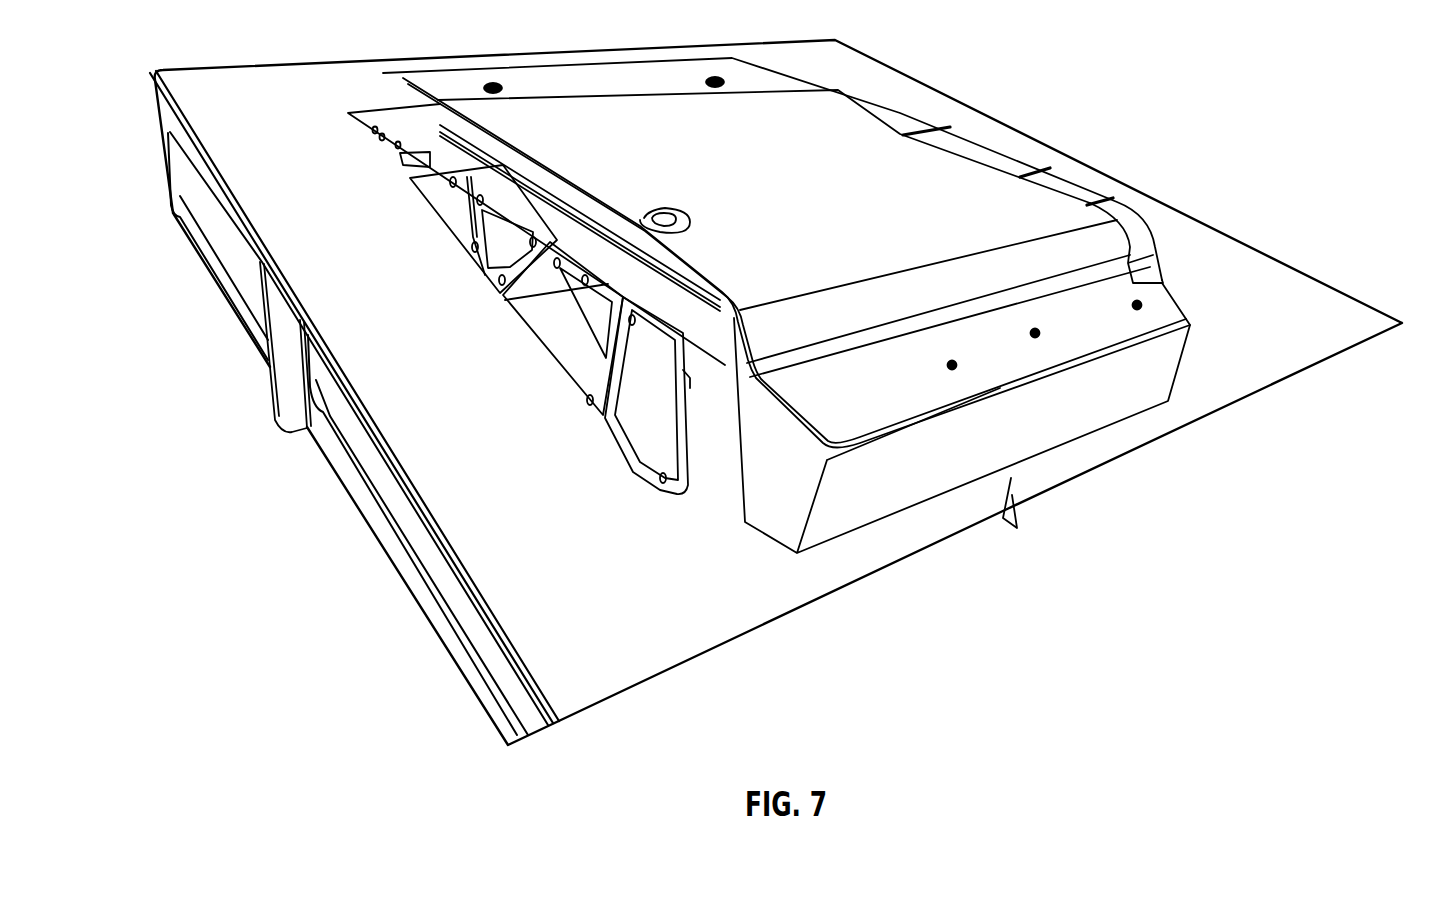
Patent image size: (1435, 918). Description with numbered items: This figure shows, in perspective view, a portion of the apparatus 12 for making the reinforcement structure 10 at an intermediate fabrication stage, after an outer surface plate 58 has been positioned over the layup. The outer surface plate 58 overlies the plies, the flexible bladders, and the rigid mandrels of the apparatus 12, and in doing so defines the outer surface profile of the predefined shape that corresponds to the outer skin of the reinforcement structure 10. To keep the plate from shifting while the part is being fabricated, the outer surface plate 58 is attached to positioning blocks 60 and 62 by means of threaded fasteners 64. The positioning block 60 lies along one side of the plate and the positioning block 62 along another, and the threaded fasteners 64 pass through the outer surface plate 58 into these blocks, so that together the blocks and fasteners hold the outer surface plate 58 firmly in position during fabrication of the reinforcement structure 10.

The reinforcement structure 10 is at (457, 124).
The apparatus 12 is at (997, 158).
The outer surface plate 58 is at (758, 153).
The positioning block 60 is at (395, 80).
The positioning block 62 is at (775, 510).
The threaded fasteners 64 is at (497, 84).